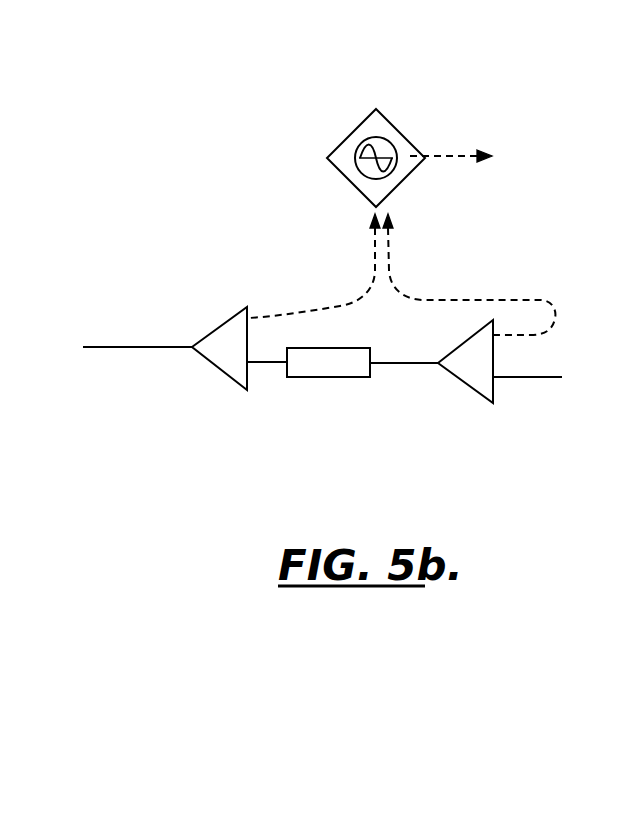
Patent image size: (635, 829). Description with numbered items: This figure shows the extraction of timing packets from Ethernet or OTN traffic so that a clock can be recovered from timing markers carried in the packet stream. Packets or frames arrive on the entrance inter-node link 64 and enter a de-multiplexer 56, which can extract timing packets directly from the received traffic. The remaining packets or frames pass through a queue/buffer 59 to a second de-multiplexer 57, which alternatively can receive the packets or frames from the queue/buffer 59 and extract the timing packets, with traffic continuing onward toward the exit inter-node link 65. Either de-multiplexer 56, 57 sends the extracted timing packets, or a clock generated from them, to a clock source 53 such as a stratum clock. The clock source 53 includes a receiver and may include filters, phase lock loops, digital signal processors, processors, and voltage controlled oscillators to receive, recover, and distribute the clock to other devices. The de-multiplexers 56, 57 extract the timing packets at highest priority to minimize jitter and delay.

The clock source 53 is at (384, 113).
The de-multiplexer 56 is at (232, 378).
The de-multiplexer 57 is at (470, 390).
The queue/buffer 59 is at (357, 377).
The entrance inter-node link 64 is at (118, 347).
The exit inter-node link 65 is at (540, 377).